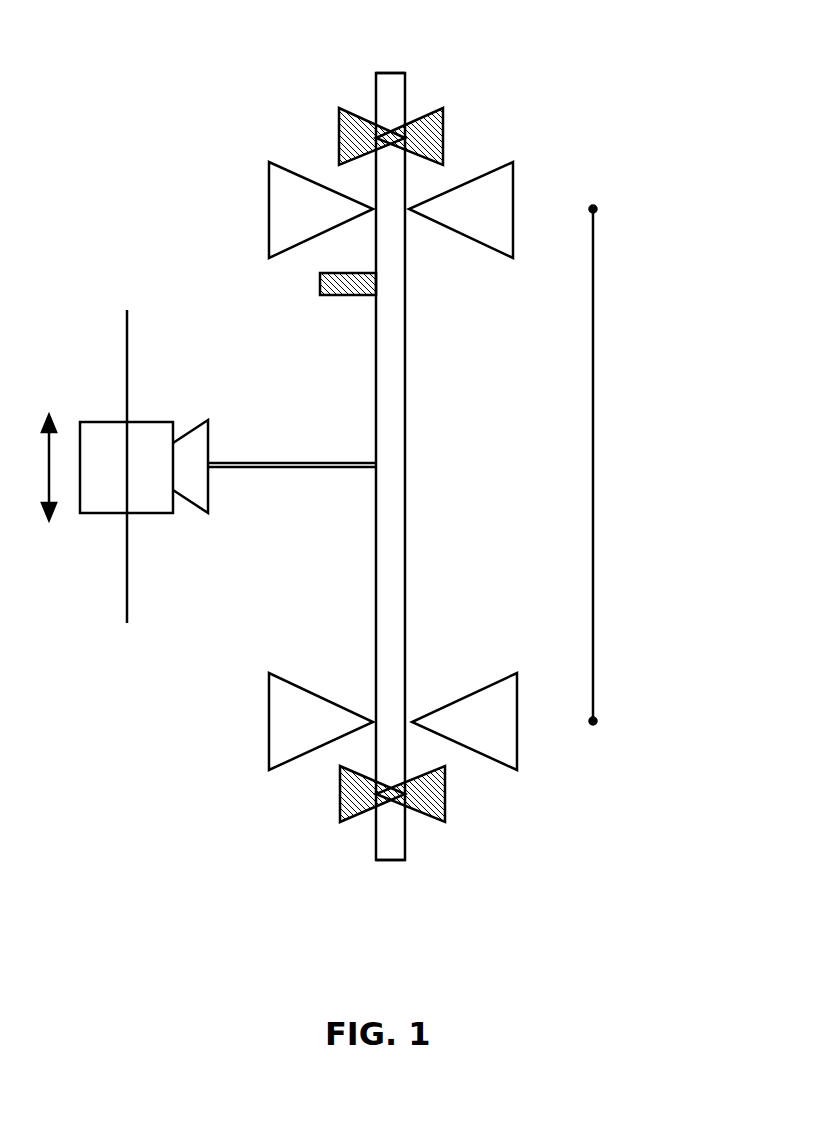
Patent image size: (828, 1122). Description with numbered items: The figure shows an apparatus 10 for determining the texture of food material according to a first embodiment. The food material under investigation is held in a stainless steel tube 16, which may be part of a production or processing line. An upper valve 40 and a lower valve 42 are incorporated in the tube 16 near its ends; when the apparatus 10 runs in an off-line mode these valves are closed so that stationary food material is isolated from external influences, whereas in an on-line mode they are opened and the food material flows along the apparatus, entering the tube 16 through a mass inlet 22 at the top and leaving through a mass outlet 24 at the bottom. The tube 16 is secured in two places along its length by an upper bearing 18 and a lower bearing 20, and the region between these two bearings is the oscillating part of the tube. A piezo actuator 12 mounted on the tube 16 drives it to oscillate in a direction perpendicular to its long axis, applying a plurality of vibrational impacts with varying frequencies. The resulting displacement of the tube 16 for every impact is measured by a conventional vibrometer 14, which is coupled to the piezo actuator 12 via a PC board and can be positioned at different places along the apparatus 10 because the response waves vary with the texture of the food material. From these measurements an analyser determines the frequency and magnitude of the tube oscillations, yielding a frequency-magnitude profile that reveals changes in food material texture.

The apparatus 10 is at (593, 209).
The piezo actuator 12 is at (320, 283).
The vibrometer 14 is at (92, 422).
The tube 16 is at (399, 440).
The upper bearing 18 is at (269, 212).
The lower bearing 20 is at (269, 722).
The mass inlet 22 is at (390, 73).
The mass outlet 24 is at (390, 862).
The upper valve 40 is at (443, 133).
The lower valve 42 is at (340, 793).